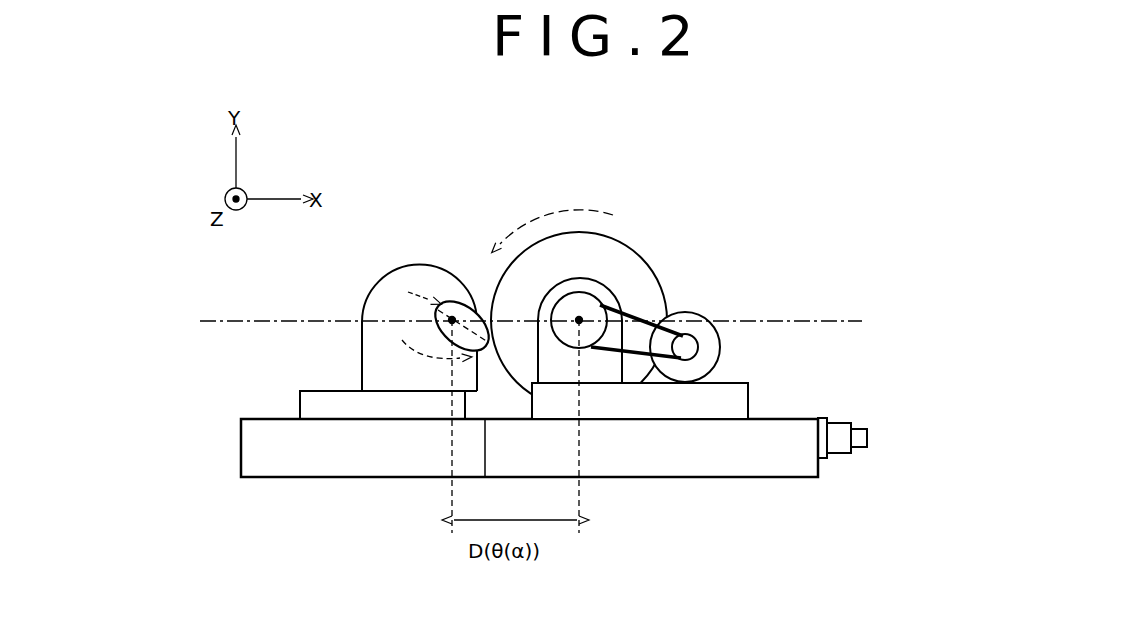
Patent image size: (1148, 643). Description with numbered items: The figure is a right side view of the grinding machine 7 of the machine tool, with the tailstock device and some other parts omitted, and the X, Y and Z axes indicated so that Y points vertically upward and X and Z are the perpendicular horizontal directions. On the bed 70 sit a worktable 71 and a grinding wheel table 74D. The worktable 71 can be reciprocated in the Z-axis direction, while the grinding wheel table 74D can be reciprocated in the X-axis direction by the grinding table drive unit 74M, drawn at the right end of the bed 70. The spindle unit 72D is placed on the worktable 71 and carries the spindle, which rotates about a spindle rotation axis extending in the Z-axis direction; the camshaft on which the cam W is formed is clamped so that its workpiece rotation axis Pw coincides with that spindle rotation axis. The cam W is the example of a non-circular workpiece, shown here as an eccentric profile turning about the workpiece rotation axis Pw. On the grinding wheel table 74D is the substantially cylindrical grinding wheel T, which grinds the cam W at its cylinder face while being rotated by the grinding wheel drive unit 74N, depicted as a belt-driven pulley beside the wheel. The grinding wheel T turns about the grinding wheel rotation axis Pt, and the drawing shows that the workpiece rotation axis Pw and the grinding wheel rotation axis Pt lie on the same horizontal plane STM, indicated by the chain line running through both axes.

The grinding machine 7 is at (699, 268).
The grinding wheel T is at (632, 243).
The grinding wheel rotation axis Pt is at (587, 306).
The horizontal plane STM is at (792, 318).
The grinding wheel drive unit 74N is at (722, 342).
The grinding wheel table 74D is at (750, 406).
The grinding table drive unit 74M is at (841, 460).
The bed 70 is at (652, 482).
The worktable 71 is at (297, 408).
The spindle unit 72D is at (361, 288).
The cam W is at (431, 333).
The workpiece rotation axis Pw is at (451, 310).